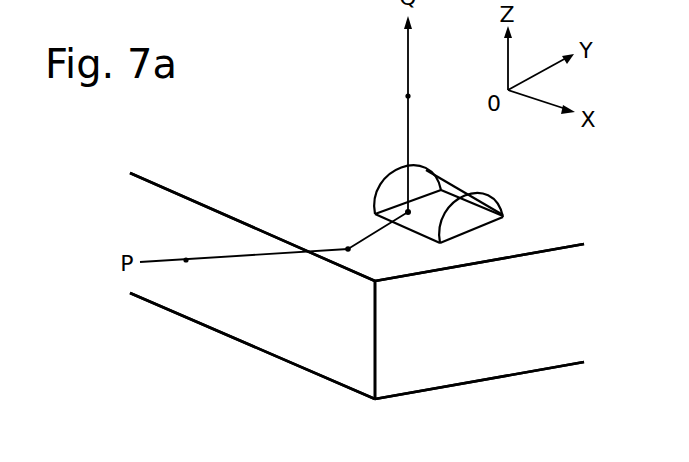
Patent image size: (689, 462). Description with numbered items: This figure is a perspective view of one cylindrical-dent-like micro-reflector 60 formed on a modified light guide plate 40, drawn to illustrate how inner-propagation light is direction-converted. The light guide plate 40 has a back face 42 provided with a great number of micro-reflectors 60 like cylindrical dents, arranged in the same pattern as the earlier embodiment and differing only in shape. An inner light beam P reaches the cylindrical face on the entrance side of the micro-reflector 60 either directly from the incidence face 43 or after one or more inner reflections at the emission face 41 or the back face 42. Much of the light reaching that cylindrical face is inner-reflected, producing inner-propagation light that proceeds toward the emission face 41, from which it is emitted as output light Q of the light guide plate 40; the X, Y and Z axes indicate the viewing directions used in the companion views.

The light guide plate 40 is at (543, 356).
The emission face 41 is at (252, 156).
The back face 42 is at (412, 249).
The incidence face 43 is at (299, 347).
The micro-reflector 60 is at (477, 181).